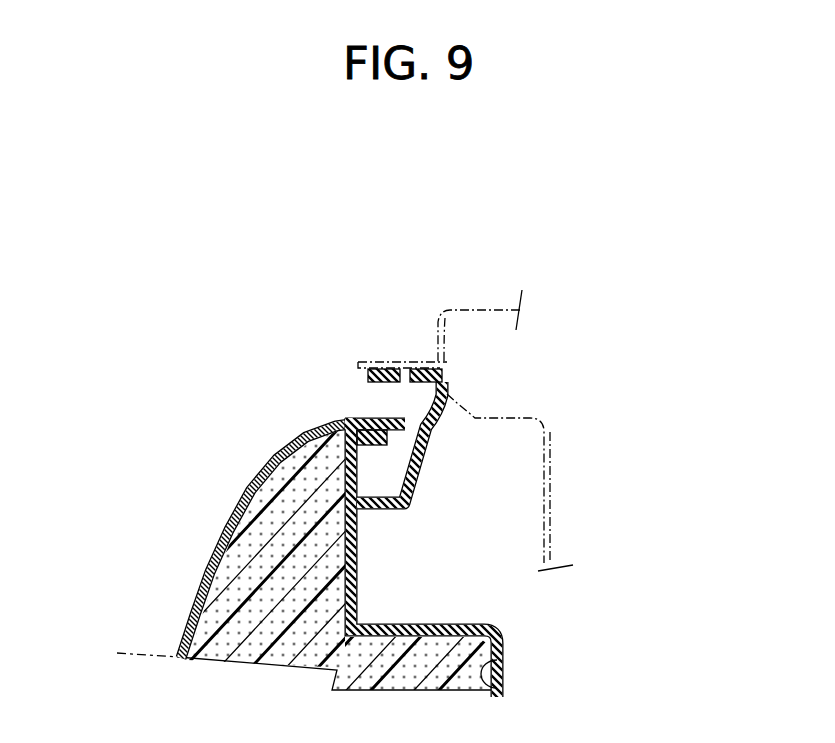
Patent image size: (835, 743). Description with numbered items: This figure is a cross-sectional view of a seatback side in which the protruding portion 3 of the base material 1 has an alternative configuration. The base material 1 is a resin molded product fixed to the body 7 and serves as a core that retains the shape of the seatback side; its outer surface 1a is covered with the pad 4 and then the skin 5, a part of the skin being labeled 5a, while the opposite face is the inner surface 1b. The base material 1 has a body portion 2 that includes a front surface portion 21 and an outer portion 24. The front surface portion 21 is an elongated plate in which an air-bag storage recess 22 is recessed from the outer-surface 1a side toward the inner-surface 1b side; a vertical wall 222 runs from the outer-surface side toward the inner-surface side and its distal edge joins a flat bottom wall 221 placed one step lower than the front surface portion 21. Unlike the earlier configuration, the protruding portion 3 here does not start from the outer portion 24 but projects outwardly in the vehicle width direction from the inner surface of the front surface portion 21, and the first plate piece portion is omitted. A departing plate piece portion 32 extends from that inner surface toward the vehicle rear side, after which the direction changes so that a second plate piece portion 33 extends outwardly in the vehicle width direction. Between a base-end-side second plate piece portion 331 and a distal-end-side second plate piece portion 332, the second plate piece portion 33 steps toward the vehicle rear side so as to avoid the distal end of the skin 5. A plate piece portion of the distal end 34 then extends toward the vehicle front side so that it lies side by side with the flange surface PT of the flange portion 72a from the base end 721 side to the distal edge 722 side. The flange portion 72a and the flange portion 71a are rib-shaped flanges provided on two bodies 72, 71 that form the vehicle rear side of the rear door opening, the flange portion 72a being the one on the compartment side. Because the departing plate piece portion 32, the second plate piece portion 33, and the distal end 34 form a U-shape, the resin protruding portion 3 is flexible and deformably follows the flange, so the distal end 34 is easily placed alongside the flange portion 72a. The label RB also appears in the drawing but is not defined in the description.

The base material 1 is at (588, 651).
The outer surface 1a is at (350, 602).
The inner surface 1b is at (497, 667).
The body portion 2 is at (375, 541).
The front surface portion 21 is at (350, 565).
The air-bag storage recess 22 is at (613, 676).
The bottom wall 221 is at (503, 692).
The vertical wall 222 is at (437, 622).
The outer portion 24 is at (380, 432).
The protruding portion 3 is at (436, 431).
The departing plate piece portion 32 is at (375, 527).
The second plate piece portion 33 is at (540, 443).
The base-end-side second plate piece portion 331 is at (419, 470).
The distal-end-side second plate piece portion 332 is at (448, 389).
The distal end 34 is at (378, 382).
The pad 4 is at (270, 533).
The skin 5 is at (216, 541).
The cover skin 5a is at (247, 487).
The body 7 is at (452, 377).
The body 71 is at (478, 307).
The flange portion 71a is at (399, 360).
The body 72 is at (546, 427).
The flange portion 72a is at (443, 390).
The flange surface PT is at (582, 363).
The base end 721 is at (447, 363).
The distal edge 722 is at (368, 378).
The reference boundary RB is at (360, 542).